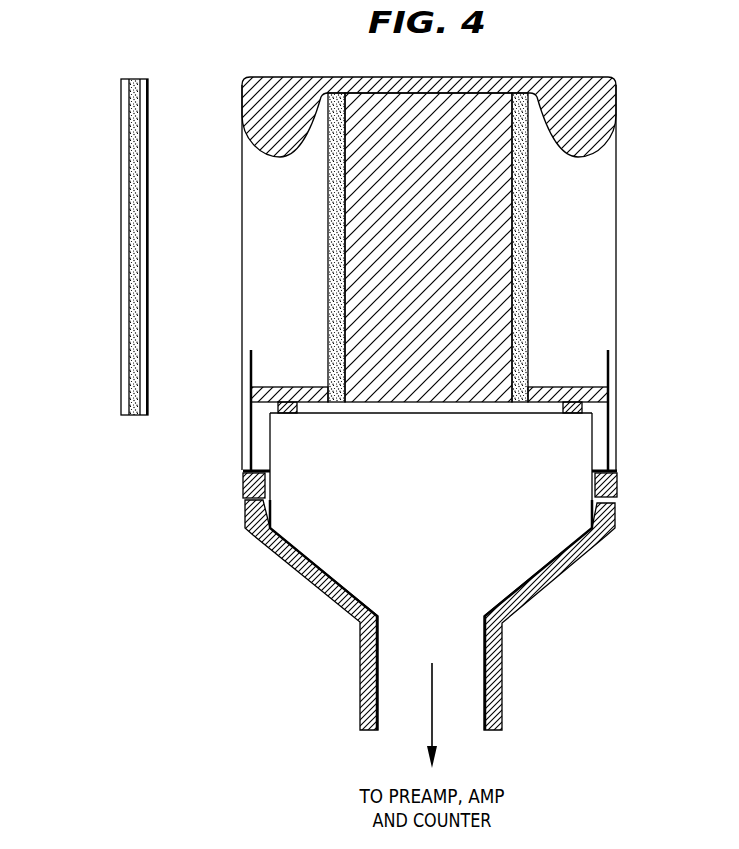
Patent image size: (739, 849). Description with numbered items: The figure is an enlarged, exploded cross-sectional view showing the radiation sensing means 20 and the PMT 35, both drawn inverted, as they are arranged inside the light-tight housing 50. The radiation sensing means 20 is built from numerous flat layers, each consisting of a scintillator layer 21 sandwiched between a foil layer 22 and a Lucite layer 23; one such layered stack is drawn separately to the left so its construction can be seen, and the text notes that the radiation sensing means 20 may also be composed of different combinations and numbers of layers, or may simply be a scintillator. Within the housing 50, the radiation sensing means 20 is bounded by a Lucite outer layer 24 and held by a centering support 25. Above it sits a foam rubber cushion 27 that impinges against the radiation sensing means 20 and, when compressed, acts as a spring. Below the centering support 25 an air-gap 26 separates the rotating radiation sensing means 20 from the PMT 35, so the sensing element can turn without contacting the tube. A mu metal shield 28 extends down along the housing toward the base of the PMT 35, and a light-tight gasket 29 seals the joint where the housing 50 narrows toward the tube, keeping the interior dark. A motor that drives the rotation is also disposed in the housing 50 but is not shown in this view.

The radiation sensing means 20 is at (442, 180).
The scintillator layer 21 is at (129, 222).
The foil layer 22 is at (147, 258).
The Lucite layer 23 is at (121, 152).
The Lucite outer layer 24 is at (328, 228).
The centering support 25 is at (575, 386).
The air-gap 26 is at (362, 410).
The foam rubber cushion 27 is at (270, 93).
The mu metal shield 28 is at (612, 420).
The light-tight gasket 29 is at (618, 501).
The PMT 35 is at (444, 527).
The housing 50 is at (502, 665).